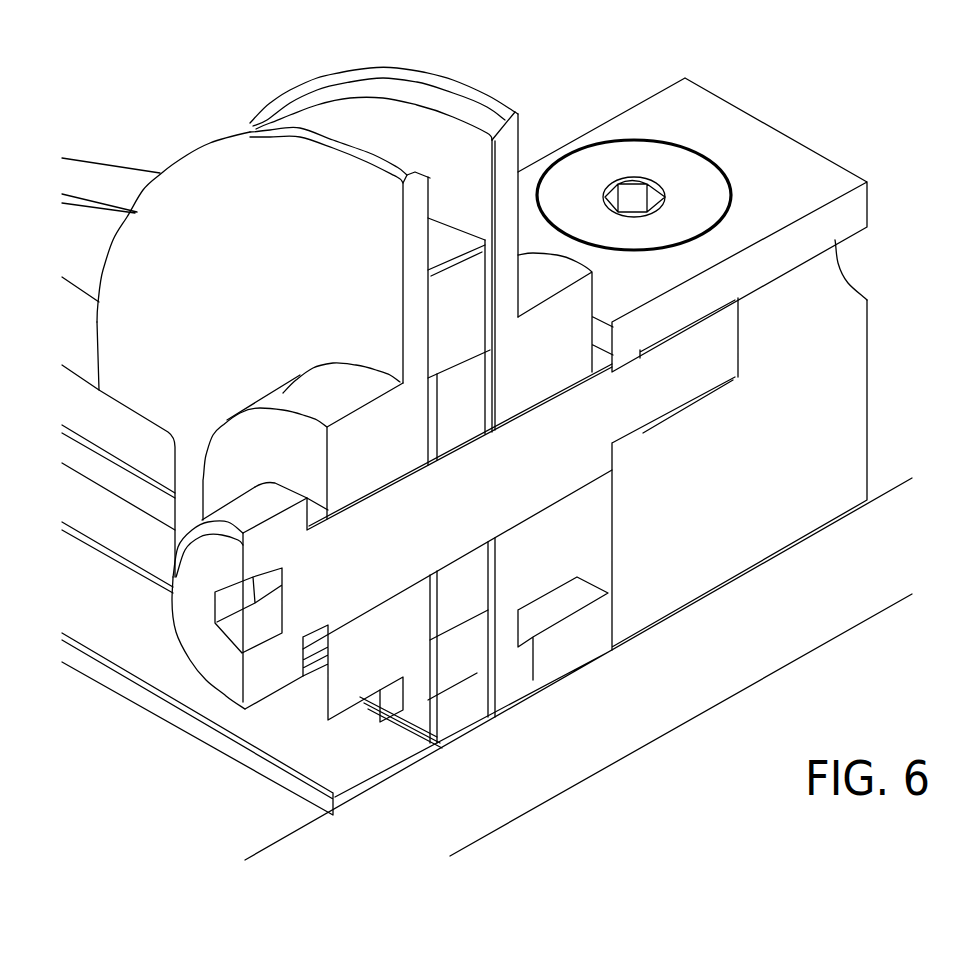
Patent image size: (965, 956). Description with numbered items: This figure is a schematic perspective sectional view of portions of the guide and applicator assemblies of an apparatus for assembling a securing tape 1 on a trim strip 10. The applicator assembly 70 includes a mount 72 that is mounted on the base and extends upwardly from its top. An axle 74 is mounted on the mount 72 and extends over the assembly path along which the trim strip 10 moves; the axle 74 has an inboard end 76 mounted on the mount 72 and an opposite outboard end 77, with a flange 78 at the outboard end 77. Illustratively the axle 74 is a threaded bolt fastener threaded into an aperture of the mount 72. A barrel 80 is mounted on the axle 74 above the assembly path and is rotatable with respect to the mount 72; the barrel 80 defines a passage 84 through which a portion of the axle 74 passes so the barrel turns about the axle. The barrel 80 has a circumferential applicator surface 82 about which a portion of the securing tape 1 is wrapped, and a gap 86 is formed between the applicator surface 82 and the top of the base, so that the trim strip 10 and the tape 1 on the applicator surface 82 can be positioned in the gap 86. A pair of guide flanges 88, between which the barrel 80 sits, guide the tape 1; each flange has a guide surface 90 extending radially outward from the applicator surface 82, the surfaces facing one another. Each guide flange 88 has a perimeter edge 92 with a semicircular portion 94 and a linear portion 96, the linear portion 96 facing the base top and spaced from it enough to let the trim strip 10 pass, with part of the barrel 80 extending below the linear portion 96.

The securing tape 1 is at (106, 177).
The trim strip 10 is at (210, 745).
The applicator assembly 70 is at (608, 409).
The mount 72 is at (843, 168).
The axle 74 is at (565, 457).
The inboard end 76 is at (680, 366).
The outboard end 77 is at (193, 609).
The flange 78 is at (275, 692).
The barrel 80 is at (463, 687).
The circumferential applicator surface 82 is at (458, 252).
The passage 84 is at (463, 555).
The gap 86 is at (468, 745).
The guide flanges 88 is at (428, 72).
The guide surface 90 is at (388, 128).
The perimeter edge 92 is at (330, 72).
The semicircular portion 94 is at (227, 128).
The linear portion 96 is at (408, 714).